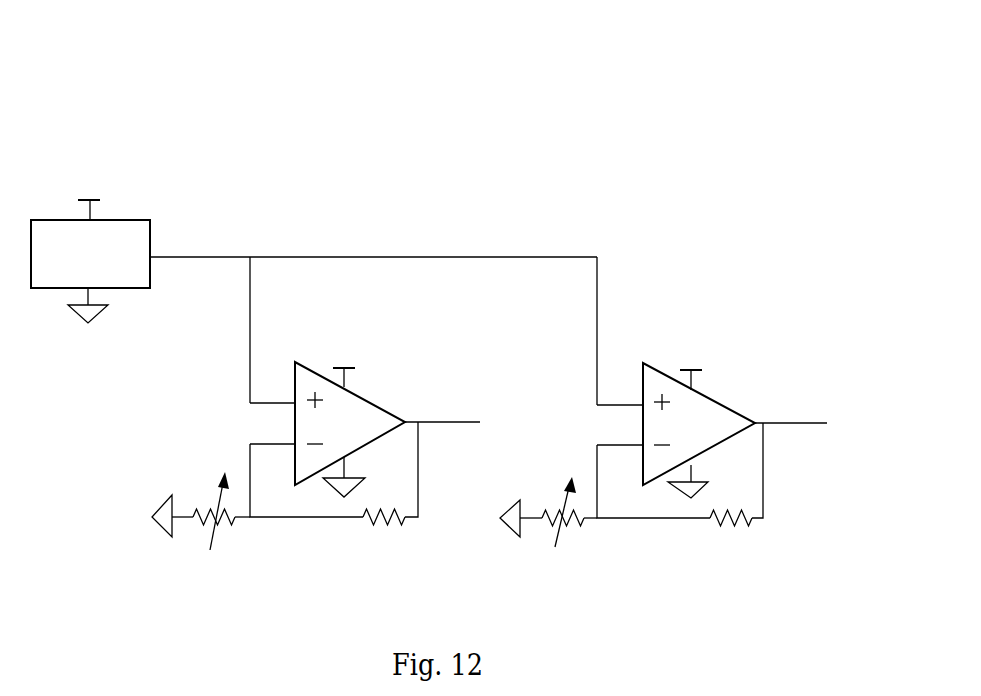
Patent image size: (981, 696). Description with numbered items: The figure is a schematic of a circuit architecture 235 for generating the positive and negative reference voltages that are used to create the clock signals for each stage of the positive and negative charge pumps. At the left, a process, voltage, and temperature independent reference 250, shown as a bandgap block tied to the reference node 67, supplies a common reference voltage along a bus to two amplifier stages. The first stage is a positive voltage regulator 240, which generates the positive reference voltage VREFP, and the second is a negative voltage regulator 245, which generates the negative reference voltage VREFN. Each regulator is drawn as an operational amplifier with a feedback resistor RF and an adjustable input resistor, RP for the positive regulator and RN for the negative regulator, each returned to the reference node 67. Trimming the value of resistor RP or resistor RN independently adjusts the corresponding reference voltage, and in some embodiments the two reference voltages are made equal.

The circuit architecture 235 is at (496, 72).
The process, voltage, and temperature independent reference 250 is at (133, 220).
The positive voltage regulator 240 is at (411, 342).
The negative voltage regulator 245 is at (694, 330).
The reference node 67 is at (92, 322).